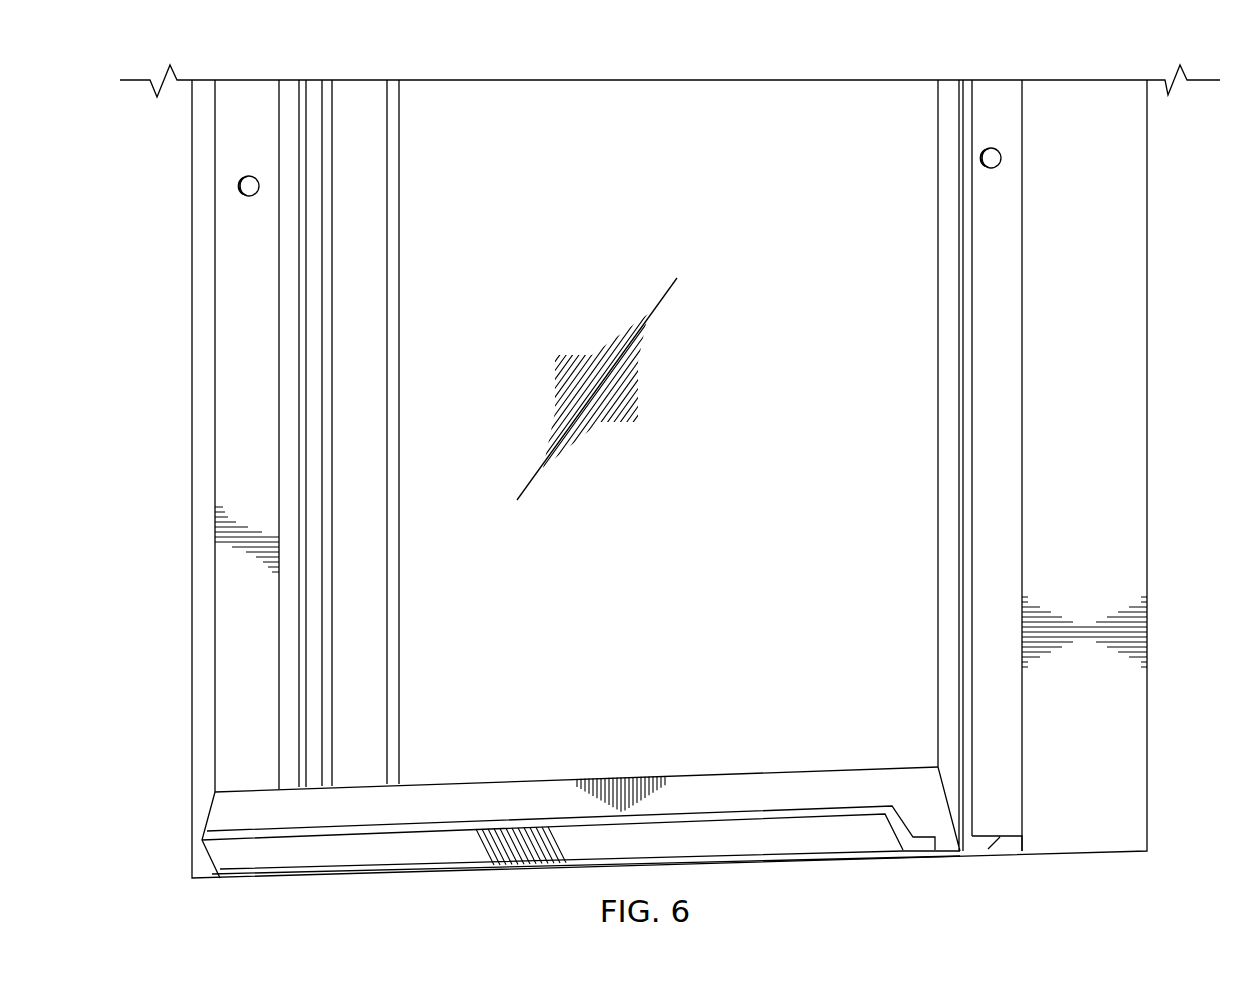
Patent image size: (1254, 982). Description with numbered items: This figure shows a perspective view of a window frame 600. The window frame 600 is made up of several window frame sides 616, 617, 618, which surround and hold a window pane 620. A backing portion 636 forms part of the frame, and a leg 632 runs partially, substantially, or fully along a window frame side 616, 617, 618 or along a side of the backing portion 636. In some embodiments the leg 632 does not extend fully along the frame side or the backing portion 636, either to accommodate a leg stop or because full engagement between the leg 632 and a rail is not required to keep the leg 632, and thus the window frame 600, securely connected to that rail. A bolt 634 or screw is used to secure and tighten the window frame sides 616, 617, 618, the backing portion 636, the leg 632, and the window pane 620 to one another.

The window frame 600 is at (345, 61).
The window frame side 616 is at (732, 787).
The window frame side 617 is at (237, 616).
The window frame side 618 is at (1132, 238).
The window pane 620 is at (627, 523).
The leg 632 is at (540, 823).
The bolt 634 is at (977, 848).
The backing portion 636 is at (948, 603).